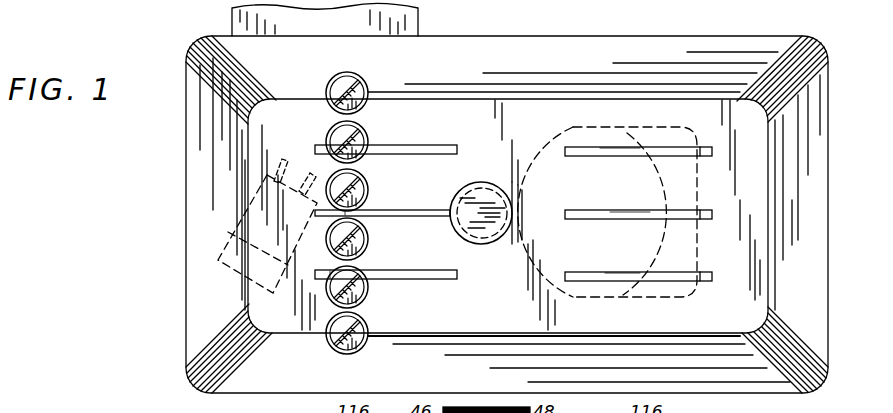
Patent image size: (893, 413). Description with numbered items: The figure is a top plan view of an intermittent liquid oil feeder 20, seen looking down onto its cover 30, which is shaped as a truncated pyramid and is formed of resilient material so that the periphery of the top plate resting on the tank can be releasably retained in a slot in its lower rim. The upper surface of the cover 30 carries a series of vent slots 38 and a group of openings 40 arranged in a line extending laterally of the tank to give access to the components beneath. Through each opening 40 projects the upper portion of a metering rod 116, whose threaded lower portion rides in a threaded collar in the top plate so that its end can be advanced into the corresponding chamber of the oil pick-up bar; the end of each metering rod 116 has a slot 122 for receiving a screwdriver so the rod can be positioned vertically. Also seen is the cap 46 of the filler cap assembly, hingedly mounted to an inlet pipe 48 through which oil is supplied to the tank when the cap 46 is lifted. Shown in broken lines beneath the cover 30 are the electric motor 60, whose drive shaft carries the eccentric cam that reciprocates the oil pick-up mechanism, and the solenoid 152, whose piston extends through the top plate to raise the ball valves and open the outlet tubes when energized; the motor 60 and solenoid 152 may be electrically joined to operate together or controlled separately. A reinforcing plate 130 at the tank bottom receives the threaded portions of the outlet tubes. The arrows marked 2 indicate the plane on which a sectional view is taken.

The intermittent liquid oil feeder 20 is at (172, 225).
The cover 30 is at (582, 48).
The reinforcing plate 130 is at (404, 20).
The metering rod 116 is at (355, 204).
The slot 122 is at (368, 84).
The openings 40 is at (375, 114).
The vent slots 38 is at (452, 146).
The cap 46 is at (478, 183).
The inlet pipe 48 is at (497, 246).
The electric motor 60 is at (545, 152).
The solenoid 152 is at (253, 200).
The section line 2- 2 is at (178, 334).